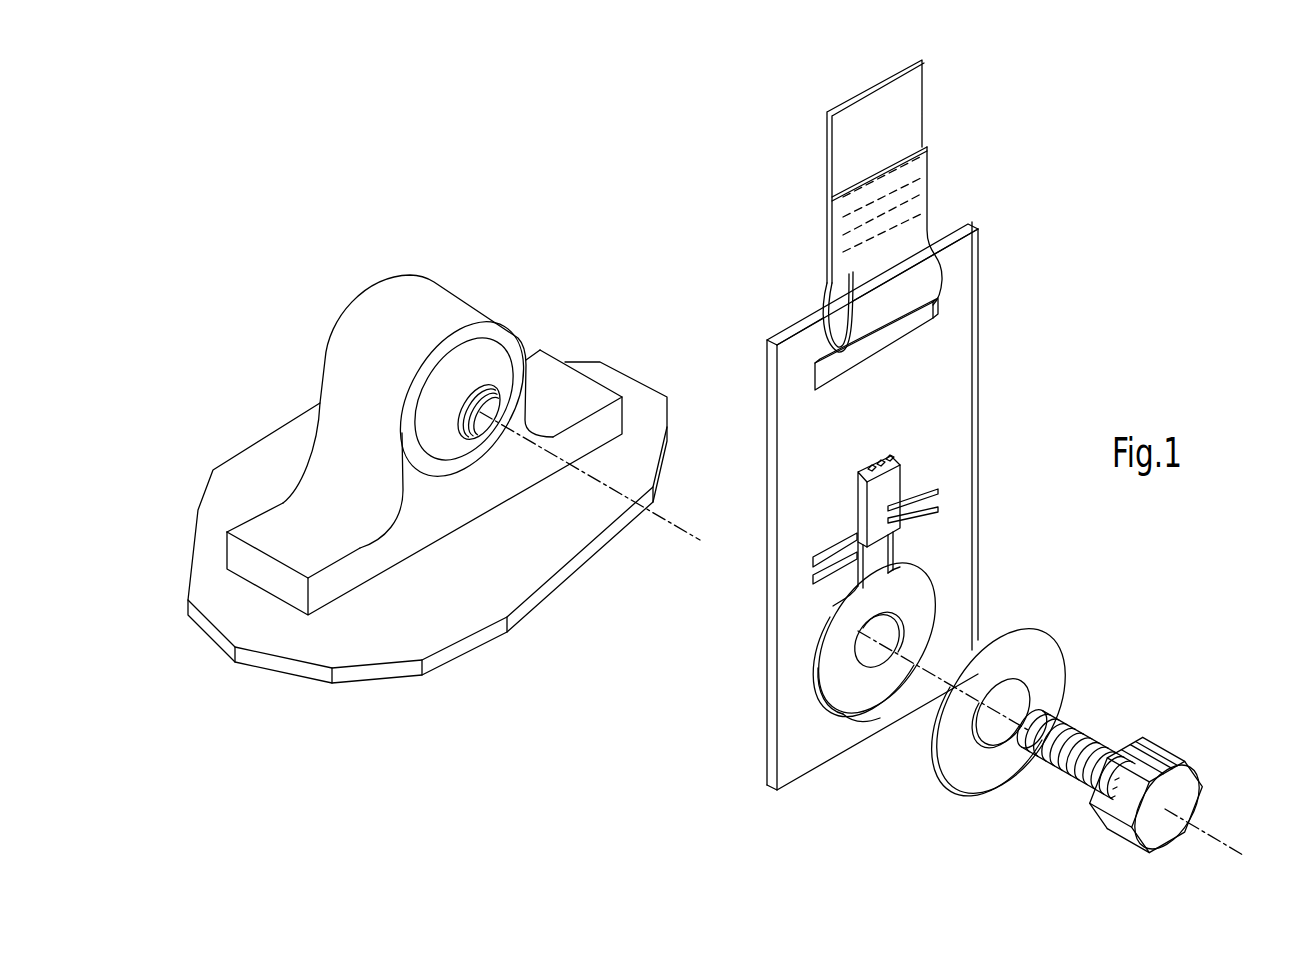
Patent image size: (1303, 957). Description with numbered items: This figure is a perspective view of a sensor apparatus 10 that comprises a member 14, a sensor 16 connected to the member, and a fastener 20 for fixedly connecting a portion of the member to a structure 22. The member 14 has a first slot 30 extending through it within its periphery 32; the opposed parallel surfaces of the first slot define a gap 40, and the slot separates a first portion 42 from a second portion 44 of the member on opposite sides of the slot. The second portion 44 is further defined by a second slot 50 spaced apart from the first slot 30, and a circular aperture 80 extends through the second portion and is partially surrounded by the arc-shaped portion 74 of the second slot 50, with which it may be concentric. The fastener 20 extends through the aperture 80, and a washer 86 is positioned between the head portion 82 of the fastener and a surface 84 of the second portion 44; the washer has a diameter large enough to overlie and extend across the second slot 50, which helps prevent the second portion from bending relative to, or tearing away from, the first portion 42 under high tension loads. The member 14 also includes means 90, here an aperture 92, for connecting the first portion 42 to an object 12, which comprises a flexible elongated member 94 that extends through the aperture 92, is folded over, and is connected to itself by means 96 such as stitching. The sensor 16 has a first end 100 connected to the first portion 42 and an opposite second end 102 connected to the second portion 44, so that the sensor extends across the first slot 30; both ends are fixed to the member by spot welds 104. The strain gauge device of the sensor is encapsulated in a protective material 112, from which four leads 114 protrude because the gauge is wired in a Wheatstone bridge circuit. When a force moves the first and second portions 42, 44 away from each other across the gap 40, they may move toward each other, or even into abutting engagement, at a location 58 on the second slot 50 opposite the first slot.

The sensor apparatus 10 is at (720, 328).
The object 12 is at (885, 212).
The member 14 is at (876, 506).
The sensor 16 is at (900, 528).
The fastener 20 is at (1139, 769).
The structure 22 is at (373, 348).
The first slot 30 is at (825, 553).
The periphery 32 is at (770, 445).
The gap 40 is at (940, 490).
The first portion 42 is at (812, 416).
The second portion 44 is at (875, 700).
The second slot 50 is at (818, 672).
The location 58 is at (865, 717).
The arc-shaped portion 74 is at (838, 718).
The aperture 80 is at (866, 648).
The head portion 82 is at (1182, 784).
The surface 84 is at (947, 703).
The washer 86 is at (1023, 723).
The means for connecting 90 is at (825, 365).
The aperture 92 is at (813, 368).
The flexible elongated member 94 is at (902, 132).
The means such as stitching 96 is at (876, 230).
The first end 100 is at (949, 466).
The second end 102 is at (858, 556).
The spot welds 104 is at (884, 462).
The protective material 112 is at (906, 512).
The leads 114 is at (853, 514).